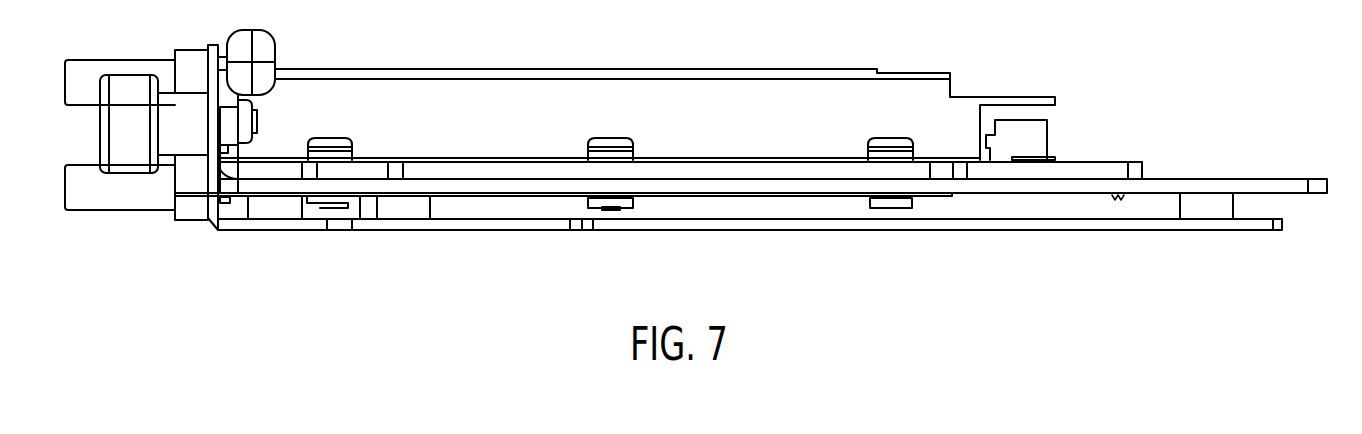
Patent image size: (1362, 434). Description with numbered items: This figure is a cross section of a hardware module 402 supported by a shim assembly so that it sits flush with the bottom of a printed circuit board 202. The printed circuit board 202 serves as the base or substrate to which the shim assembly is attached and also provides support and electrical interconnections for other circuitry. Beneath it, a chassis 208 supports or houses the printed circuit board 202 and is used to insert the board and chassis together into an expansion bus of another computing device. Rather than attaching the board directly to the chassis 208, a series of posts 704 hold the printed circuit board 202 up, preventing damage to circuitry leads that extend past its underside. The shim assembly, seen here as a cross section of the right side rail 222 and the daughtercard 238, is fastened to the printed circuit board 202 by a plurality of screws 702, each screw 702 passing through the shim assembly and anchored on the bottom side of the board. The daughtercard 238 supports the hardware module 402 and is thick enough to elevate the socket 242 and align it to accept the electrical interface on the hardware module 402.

The printed circuit board 202 is at (1178, 187).
The chassis 208 is at (1022, 225).
The right side rail 222 is at (762, 173).
The daughtercard 238 is at (1113, 168).
The socket 242 is at (1038, 135).
The hardware module 402 is at (402, 83).
The screw 702 is at (898, 138).
The post 704 is at (408, 215).